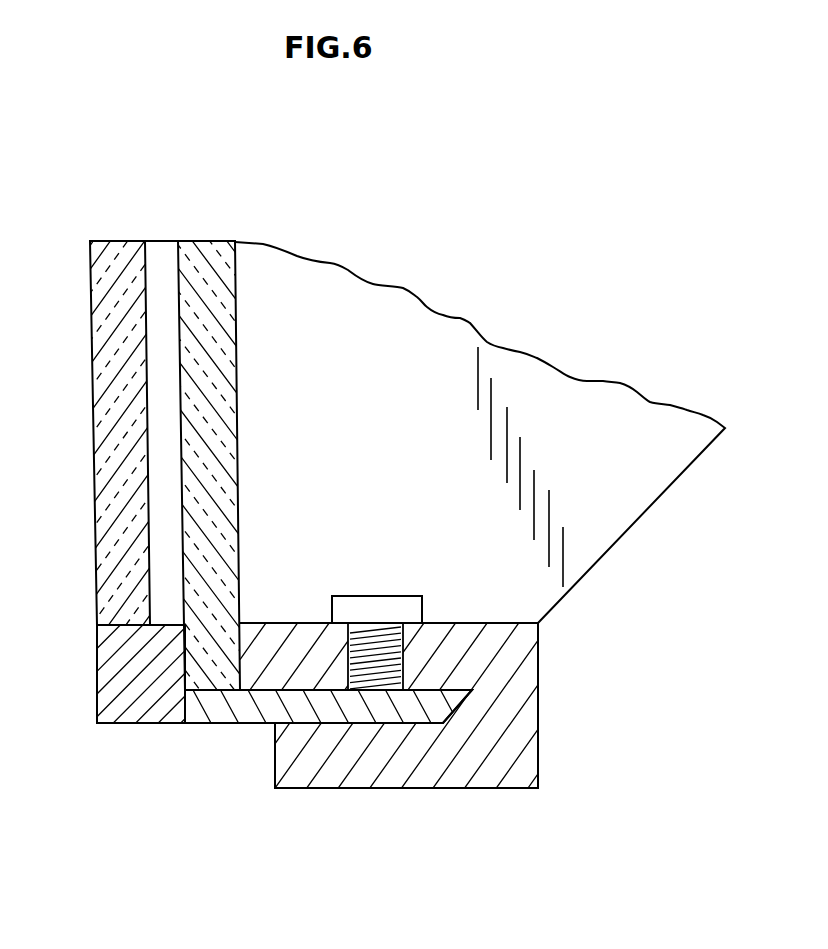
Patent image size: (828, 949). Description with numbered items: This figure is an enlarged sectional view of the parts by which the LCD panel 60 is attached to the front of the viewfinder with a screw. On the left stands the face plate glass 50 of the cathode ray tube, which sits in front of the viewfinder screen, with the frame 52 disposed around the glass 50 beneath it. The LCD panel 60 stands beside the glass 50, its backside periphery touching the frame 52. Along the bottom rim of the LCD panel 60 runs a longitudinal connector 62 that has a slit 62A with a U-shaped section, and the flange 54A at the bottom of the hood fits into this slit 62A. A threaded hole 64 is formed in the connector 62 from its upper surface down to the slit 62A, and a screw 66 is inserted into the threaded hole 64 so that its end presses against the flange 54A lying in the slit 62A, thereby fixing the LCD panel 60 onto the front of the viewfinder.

The face plate glass 50 is at (115, 400).
The frame 52 is at (133, 675).
The flange 54A is at (343, 715).
The LCD panel 60 is at (235, 366).
The connector 62 is at (515, 723).
The slit 62A is at (267, 726).
The threaded hole 64 is at (368, 628).
The screw 66 is at (398, 606).